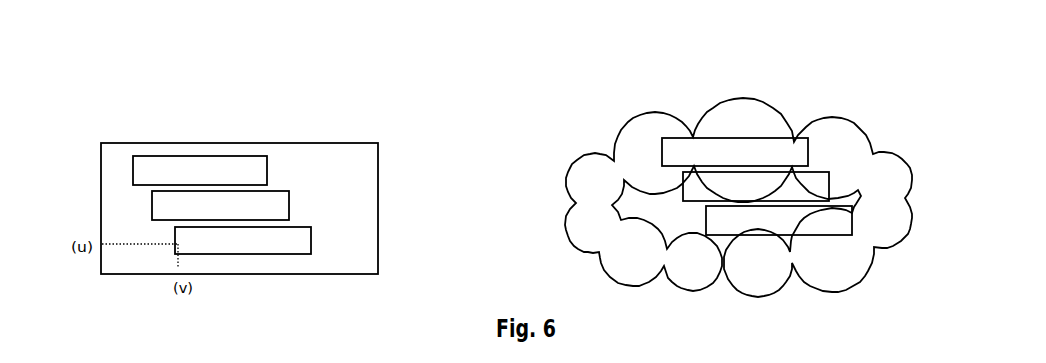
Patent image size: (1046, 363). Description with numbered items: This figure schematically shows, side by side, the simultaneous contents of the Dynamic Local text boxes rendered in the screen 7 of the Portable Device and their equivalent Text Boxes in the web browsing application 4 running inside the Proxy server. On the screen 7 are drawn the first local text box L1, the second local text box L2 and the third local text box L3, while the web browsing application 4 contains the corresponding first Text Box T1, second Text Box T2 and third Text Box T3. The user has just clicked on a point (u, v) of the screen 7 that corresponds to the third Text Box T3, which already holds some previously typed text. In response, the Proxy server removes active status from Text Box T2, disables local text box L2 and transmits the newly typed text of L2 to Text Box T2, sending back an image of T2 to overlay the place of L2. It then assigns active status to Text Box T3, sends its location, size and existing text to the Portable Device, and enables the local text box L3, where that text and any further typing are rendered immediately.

The screen 7 is at (351, 150).
The Dynamic Local text box L1 is at (225, 156).
The Dynamic Local text box L2 is at (267, 196).
The local text box L3 is at (292, 230).
The web browsing application 4 is at (875, 180).
The Text Box T1 is at (687, 147).
The Text Box T2 is at (816, 180).
The text box T3 is at (838, 215).